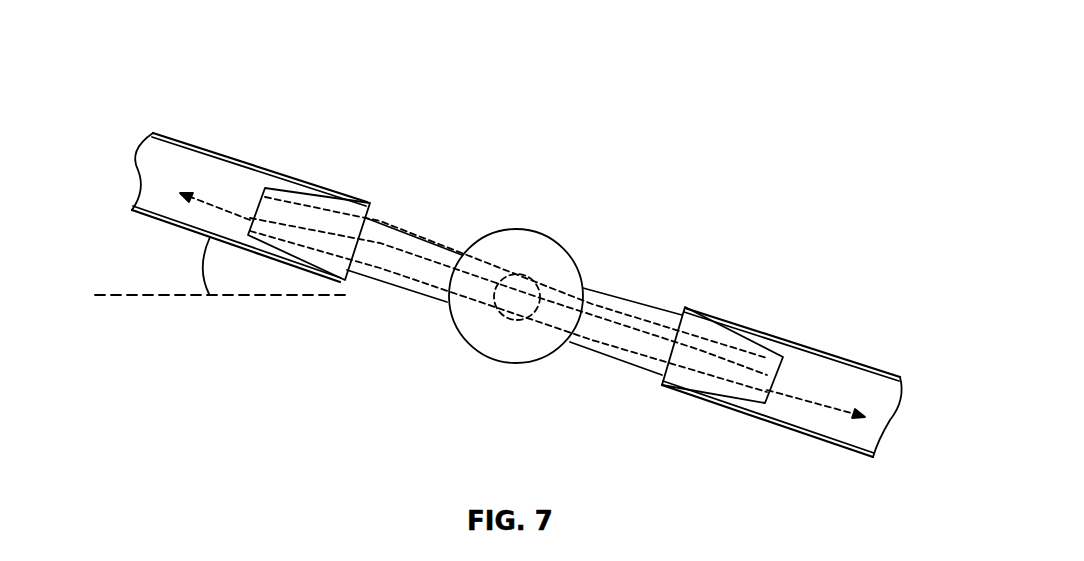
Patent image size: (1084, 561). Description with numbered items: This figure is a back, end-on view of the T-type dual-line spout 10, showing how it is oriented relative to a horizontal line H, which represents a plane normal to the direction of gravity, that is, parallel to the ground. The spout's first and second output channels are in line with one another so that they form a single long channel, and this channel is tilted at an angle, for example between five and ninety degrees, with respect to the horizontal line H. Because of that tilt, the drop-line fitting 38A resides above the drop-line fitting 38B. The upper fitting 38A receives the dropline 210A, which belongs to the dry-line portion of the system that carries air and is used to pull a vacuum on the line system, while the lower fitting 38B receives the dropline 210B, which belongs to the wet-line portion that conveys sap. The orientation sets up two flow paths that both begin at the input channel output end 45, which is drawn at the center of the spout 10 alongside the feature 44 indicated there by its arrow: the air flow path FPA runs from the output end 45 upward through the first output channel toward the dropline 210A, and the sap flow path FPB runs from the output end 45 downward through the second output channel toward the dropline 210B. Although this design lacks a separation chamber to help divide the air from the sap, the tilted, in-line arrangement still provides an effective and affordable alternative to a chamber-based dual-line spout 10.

The dual-line spout 10 is at (285, 82).
The dropline 210A is at (178, 134).
The dropline 210B is at (830, 355).
The air flow path FPA is at (318, 232).
The sap flow path FPB is at (698, 352).
The drop-line fitting 38A is at (343, 311).
The drop-line fitting 38B is at (598, 367).
The focal point 44 is at (540, 293).
The input channel output end 45 is at (512, 288).
The horizontal line H is at (152, 297).